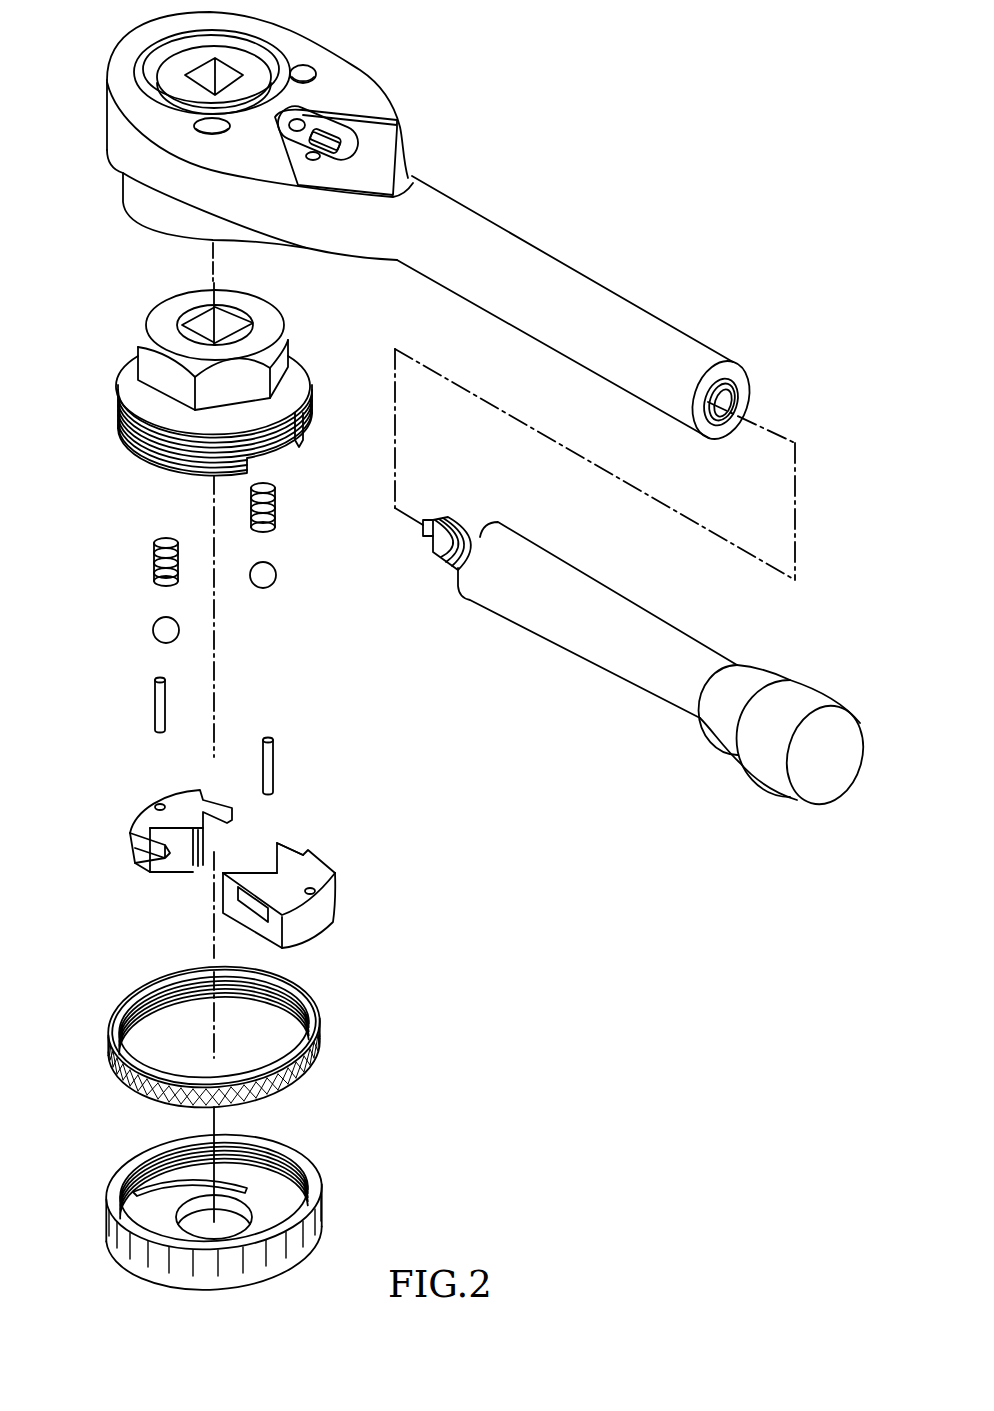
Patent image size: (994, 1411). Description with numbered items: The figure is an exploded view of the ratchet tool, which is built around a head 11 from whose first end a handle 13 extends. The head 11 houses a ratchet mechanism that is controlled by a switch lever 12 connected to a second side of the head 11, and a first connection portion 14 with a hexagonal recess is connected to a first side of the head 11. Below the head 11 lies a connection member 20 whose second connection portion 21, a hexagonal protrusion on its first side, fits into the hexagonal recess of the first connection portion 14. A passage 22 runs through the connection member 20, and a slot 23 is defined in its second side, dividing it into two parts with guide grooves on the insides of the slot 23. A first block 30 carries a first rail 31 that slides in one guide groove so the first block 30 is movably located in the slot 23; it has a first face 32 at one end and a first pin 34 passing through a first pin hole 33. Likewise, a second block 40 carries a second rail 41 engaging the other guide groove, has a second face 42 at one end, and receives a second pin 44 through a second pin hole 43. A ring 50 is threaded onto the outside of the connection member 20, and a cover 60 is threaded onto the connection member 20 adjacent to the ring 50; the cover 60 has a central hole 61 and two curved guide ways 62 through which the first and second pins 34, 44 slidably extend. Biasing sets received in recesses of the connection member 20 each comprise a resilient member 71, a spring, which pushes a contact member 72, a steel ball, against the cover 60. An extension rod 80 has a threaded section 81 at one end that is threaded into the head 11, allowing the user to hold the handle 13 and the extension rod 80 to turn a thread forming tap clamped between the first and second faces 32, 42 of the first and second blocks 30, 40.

The head 11 is at (325, 58).
The switch lever 12 is at (352, 130).
The handle 13 is at (556, 272).
The first connection portion 14 is at (143, 200).
The connection member 20 is at (128, 363).
The second connection portion 21 is at (283, 345).
The passage 22 is at (205, 327).
The slot 23 is at (272, 435).
The first block 30 is at (335, 866).
The first rail 31 is at (317, 855).
The first face 32 is at (257, 872).
The first pin hole 33 is at (314, 889).
The first pin 34 is at (276, 757).
The second block 40 is at (136, 845).
The second rail 41 is at (145, 843).
The second face 42 is at (202, 870).
The second pin hole 43 is at (160, 805).
The second pin 44 is at (155, 690).
The ring 50 is at (321, 1032).
The cover 60 is at (274, 1188).
The hole 61 is at (250, 1210).
The curved guide ways 62 is at (228, 1188).
The resilient member 71 is at (276, 510).
The contact member 72 is at (274, 586).
The extension rod 80 is at (641, 665).
The threaded section 81 is at (447, 565).